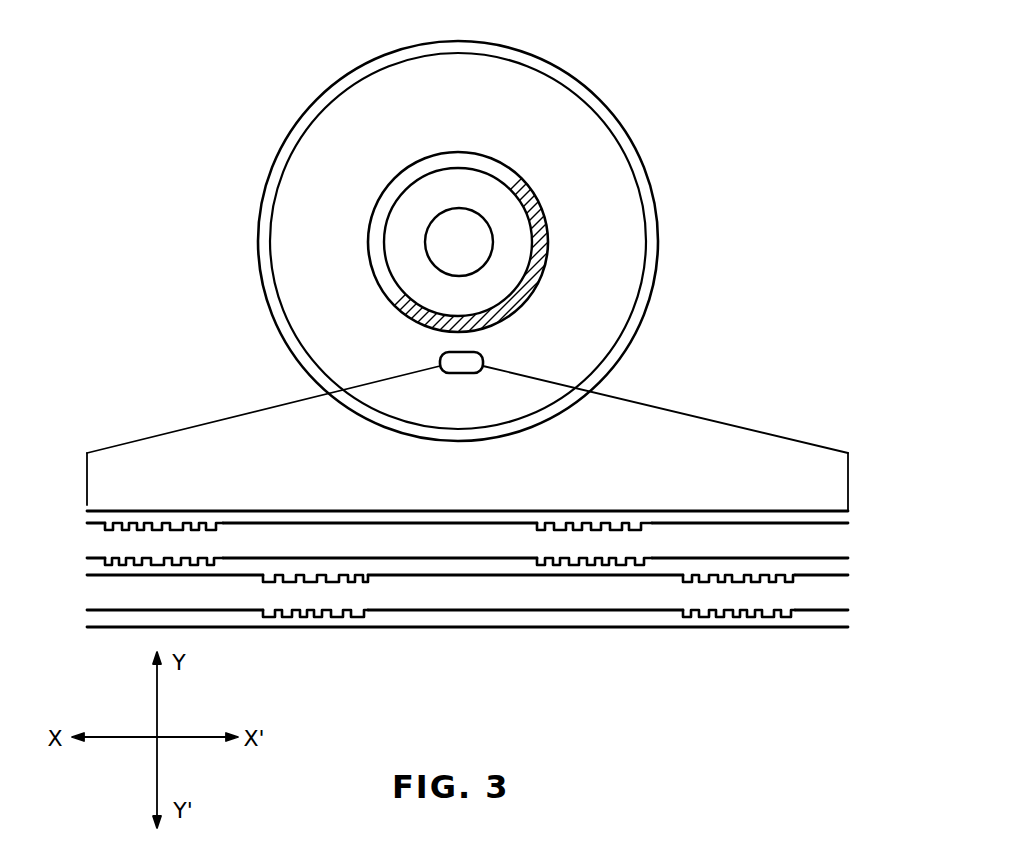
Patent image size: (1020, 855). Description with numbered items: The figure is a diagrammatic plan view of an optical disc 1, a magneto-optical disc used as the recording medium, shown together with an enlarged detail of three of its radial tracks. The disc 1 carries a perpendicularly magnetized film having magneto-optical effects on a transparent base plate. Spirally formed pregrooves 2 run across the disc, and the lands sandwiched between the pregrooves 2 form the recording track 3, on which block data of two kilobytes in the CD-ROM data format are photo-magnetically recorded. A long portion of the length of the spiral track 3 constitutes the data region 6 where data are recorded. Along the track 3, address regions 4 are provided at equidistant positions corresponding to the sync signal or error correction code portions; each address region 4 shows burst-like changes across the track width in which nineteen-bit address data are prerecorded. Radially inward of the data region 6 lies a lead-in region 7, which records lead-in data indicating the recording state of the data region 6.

The optical disc 1 is at (640, 140).
The pregrooves 2 is at (830, 515).
The recording track 3 is at (397, 590).
The address regions 4 is at (103, 495).
The data region 6 is at (528, 122).
The lead-in region 7 is at (540, 242).